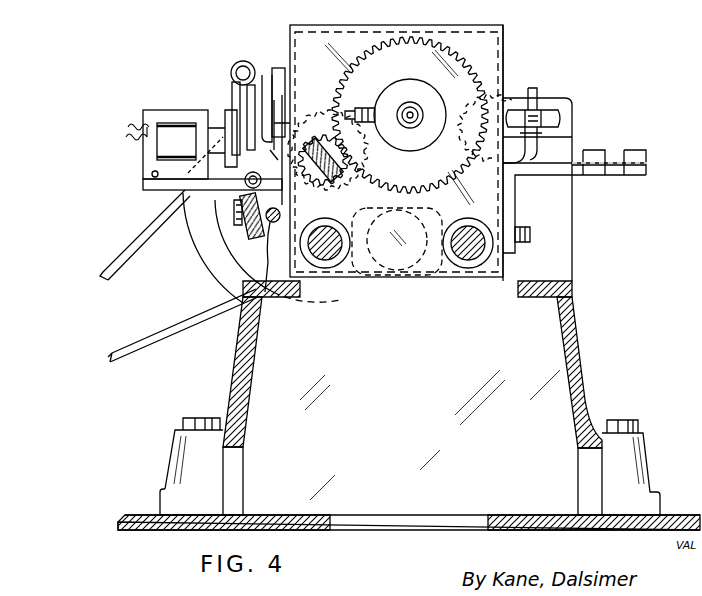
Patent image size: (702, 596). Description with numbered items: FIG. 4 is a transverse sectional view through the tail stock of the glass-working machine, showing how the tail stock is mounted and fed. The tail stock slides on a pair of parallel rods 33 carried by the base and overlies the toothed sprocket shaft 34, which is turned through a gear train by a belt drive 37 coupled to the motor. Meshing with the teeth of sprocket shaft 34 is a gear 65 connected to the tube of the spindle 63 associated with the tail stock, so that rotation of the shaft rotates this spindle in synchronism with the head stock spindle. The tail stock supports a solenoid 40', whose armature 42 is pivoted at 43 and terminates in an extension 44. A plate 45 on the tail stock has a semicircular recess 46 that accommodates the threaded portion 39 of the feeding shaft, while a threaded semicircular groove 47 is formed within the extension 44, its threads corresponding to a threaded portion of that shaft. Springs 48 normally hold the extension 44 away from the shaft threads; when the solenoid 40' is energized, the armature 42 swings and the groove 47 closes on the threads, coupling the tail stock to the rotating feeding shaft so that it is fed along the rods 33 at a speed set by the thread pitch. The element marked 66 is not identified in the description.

The parallel rods 33 is at (325, 266).
The sprocket shaft 34 is at (314, 142).
The belt drive 37 is at (120, 355).
The threaded zone 39 is at (240, 283).
The solenoid 40' is at (174, 132).
The armature 42 is at (272, 112).
The pivot 43 is at (247, 182).
The extension 44 is at (246, 222).
The plate 45 is at (302, 272).
The semicircular recess 46 is at (263, 293).
The semicircular groove 47 is at (254, 230).
The springs 48 is at (239, 62).
The spindle 63 is at (412, 114).
The gear 65 is at (510, 52).
The conduit 66 is at (554, 102).